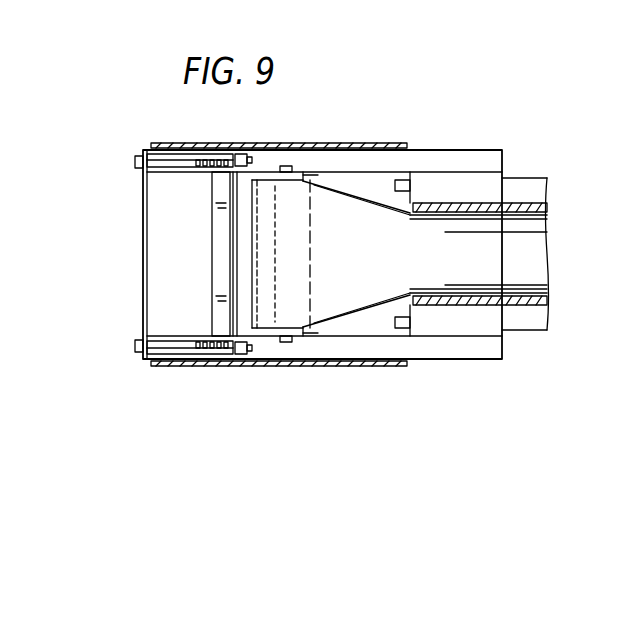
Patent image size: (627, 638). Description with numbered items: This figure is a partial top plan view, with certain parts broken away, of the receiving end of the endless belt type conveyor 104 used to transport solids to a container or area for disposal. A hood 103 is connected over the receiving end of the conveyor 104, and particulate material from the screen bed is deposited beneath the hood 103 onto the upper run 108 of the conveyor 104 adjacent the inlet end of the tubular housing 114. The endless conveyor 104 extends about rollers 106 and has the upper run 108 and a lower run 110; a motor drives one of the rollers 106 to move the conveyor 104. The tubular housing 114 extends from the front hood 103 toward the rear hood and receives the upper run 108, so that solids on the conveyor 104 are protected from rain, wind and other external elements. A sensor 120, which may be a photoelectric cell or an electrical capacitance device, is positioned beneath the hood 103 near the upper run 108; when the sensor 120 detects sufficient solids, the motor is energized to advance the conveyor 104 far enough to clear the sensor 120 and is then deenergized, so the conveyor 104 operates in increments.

The hood 103 is at (310, 144).
The endless belt type conveyor 104 is at (535, 257).
The rollers 106 is at (320, 173).
The upper run 108 is at (433, 263).
The lower run 110 is at (318, 254).
The tubular housing 114 is at (547, 202).
The sensor 120 is at (412, 172).